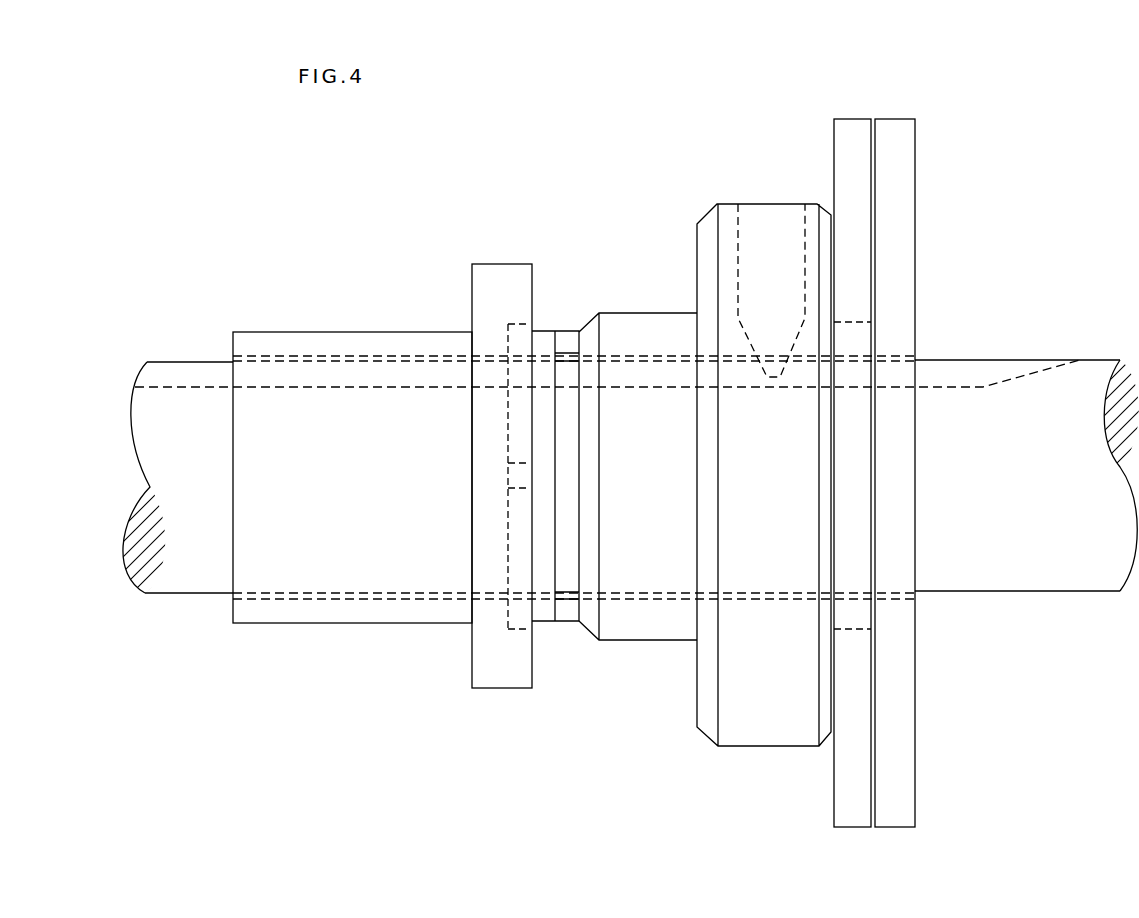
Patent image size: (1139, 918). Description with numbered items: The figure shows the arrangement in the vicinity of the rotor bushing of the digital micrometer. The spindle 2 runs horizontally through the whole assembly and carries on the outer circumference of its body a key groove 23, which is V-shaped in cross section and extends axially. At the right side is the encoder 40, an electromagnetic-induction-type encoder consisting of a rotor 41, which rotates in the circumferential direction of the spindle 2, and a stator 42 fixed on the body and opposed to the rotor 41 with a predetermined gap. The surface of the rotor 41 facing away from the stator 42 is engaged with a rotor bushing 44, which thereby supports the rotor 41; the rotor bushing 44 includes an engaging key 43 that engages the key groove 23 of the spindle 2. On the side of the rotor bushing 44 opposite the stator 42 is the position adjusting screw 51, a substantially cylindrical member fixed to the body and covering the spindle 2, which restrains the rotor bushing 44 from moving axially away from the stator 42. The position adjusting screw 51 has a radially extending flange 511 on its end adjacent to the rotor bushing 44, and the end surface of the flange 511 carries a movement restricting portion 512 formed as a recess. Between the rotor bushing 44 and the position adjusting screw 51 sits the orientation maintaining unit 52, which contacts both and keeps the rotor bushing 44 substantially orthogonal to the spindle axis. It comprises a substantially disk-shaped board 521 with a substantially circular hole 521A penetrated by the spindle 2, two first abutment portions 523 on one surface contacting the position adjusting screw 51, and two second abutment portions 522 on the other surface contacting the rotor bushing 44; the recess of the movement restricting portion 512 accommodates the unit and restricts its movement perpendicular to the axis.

The spindle 2 is at (146, 410).
The key groove 23 is at (189, 372).
The encoder 40 is at (870, 429).
The rotor 41 is at (848, 119).
The stator 42 is at (893, 119).
The engaging key 43 is at (773, 215).
The rotor bushing 44 is at (730, 204).
The position adjusting screw 51 is at (455, 328).
The flange 511 is at (502, 685).
The movement restricting portion 512 is at (528, 617).
The orientation maintaining unit 52 is at (538, 340).
The board 521 is at (545, 338).
The hole 521A is at (545, 355).
The second abutment portions 522 is at (565, 335).
The first abutment portions 523 is at (508, 480).